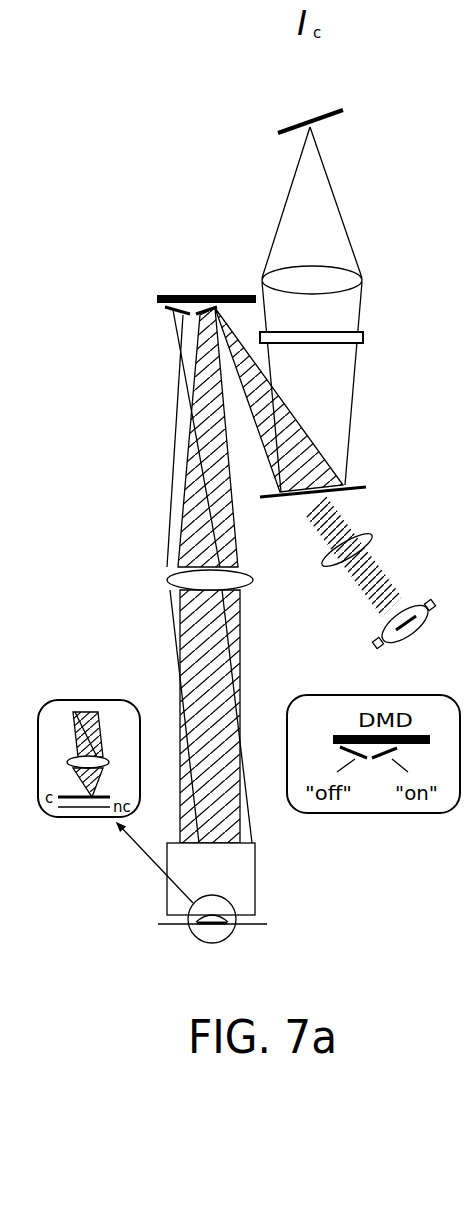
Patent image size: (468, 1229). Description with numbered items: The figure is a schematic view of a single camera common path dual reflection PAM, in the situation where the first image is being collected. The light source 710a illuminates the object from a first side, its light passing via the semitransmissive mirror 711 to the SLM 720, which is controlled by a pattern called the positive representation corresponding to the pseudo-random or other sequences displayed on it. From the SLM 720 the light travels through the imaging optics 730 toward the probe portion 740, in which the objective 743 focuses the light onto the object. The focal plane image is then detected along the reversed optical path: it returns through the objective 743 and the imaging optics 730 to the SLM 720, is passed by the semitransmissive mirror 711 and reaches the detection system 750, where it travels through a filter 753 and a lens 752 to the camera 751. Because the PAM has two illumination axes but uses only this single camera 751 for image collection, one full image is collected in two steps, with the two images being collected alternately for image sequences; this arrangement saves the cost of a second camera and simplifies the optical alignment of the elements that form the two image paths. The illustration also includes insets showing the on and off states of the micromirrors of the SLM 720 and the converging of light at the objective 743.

The light source 710a is at (403, 640).
The semitransmissive mirror 711 is at (340, 497).
The SLM 720 is at (220, 291).
The imaging optics 730 is at (139, 585).
The probe portion 740 is at (316, 891).
The objective 743 is at (180, 900).
The detection system 750 is at (417, 236).
The camera 751 is at (310, 111).
The lens 752 is at (340, 285).
The filter 753 is at (339, 337).